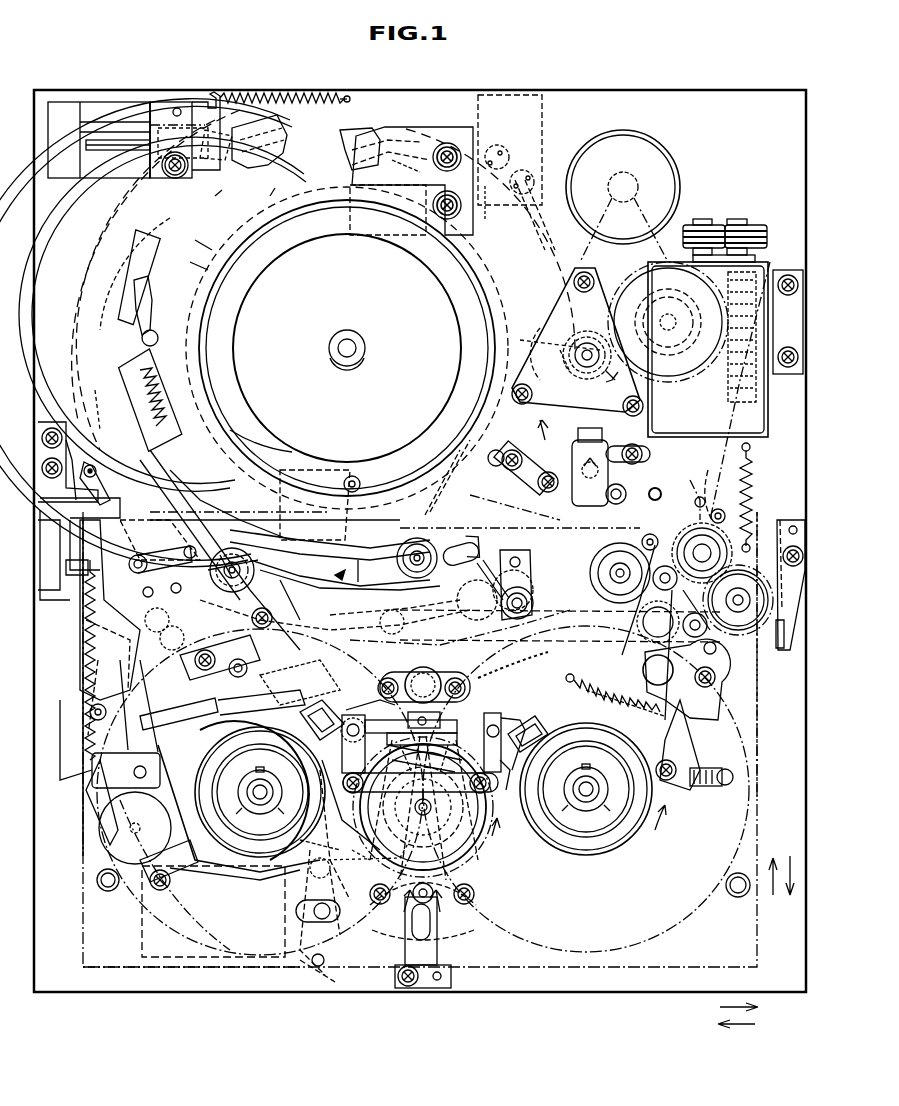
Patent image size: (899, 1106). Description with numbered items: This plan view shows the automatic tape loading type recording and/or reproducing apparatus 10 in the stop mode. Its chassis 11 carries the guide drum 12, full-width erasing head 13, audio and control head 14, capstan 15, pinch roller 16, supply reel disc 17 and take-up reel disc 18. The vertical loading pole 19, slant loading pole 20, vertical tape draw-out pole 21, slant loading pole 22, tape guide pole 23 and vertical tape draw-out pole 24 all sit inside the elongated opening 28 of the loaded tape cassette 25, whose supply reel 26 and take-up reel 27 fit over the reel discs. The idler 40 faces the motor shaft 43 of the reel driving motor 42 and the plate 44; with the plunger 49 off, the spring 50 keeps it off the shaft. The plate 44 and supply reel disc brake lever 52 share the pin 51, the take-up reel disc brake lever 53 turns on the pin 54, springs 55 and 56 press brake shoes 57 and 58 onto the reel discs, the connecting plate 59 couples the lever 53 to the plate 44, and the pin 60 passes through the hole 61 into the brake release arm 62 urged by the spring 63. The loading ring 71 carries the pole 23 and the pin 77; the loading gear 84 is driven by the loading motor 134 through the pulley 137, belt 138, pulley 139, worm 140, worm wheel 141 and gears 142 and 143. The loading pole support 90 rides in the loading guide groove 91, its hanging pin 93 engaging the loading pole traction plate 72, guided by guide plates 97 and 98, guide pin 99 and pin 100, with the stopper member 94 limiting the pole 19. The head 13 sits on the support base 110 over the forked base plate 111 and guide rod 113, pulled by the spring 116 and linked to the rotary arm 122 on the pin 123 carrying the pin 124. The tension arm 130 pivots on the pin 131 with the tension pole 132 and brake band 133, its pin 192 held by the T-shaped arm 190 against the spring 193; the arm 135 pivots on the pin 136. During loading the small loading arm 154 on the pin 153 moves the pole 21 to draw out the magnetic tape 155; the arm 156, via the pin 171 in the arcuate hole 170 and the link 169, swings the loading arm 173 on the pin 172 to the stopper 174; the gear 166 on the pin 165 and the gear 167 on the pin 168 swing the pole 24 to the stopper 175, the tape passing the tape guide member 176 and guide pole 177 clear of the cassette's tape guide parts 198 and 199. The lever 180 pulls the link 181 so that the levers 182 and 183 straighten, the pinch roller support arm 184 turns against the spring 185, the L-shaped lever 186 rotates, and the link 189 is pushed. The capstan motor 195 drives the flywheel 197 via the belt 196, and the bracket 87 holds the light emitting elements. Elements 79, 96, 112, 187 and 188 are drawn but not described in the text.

The tape recorder chassis 10 is at (701, 67).
The spring 11 is at (340, 96).
The head drum 12 is at (462, 250).
The guide block 13 is at (286, 124).
The link 14 is at (616, 466).
The slider 15 is at (604, 490).
The idler 16 is at (600, 590).
The supply reel 17 is at (226, 822).
The take-up reel 18 is at (624, 850).
The gear 19 is at (262, 582).
The plate 20 is at (280, 508).
The lever 21 is at (140, 520).
The guide 22 is at (470, 490).
The roller 23 is at (417, 571).
The lever 24 is at (690, 480).
The lever 25 is at (84, 840).
The arc 26 is at (148, 912).
The line 27 is at (775, 659).
The gear teeth 28 is at (545, 652).
The pinch roller arm 40 is at (478, 852).
The bracket 42 is at (458, 936).
The screw 43 is at (474, 880).
The block 44 is at (445, 718).
The dashed outline 49 is at (160, 962).
The pinch roller 50 is at (410, 846).
The lever 51 is at (342, 712).
The block 52 is at (306, 714).
The link 53 is at (515, 730).
The post 54 is at (490, 712).
The post 55 is at (345, 716).
The arm 56 is at (504, 778).
The reel hub 57 is at (262, 774).
The block 58 is at (530, 728).
The lever 59 is at (322, 810).
The capstan roller 60 is at (442, 680).
The bar 61 is at (420, 756).
The element 62 is at (282, 896).
The lever 63 is at (326, 880).
The lever 71 is at (530, 236).
The arm 72 is at (86, 470).
The guide 77 is at (385, 174).
The spring 79 is at (160, 368).
The triangular arm 84 is at (577, 342).
The frame 87 is at (520, 96).
The pin 90 is at (246, 681).
The ring 91 is at (222, 285).
The guide 93 is at (232, 480).
The block 94 is at (430, 126).
The lever 96 is at (300, 618).
The pins 97 is at (160, 616).
The arm 98 is at (330, 545).
The lever 99 is at (288, 596).
The plate 100 is at (220, 667).
The block 110 is at (168, 104).
The head 111 is at (108, 104).
The head block 112 is at (68, 104).
The head 113 is at (125, 144).
The spring 116 is at (268, 96).
The arc 122 is at (86, 292).
The lever 123 is at (95, 395).
The guide 124 is at (128, 258).
The plate 130 is at (160, 742).
The pin 131 is at (150, 786).
The bracket 132 is at (72, 430).
The lever 133 is at (262, 872).
The belt 134 is at (750, 420).
The lever 135 is at (338, 946).
The pin 136 is at (328, 966).
The pulley 137 is at (693, 224).
The base 138 is at (765, 246).
The pulley 139 is at (752, 224).
The bracket 140 is at (790, 374).
The motor 141 is at (708, 349).
The motor pulley 142 is at (668, 336).
The arc 143 is at (536, 326).
The pin 153 is at (128, 566).
The link 154 is at (160, 572).
The pin 155 is at (352, 475).
The lever 156 is at (468, 628).
The roller 165 is at (760, 640).
The shaft 166 is at (745, 610).
The pin 167 is at (729, 503).
The plate 168 is at (790, 575).
The link 169 is at (530, 562).
The lever 170 is at (482, 566).
The pin 171 is at (530, 600).
The pin 172 is at (640, 542).
The line 173 is at (520, 527).
The pin 174 is at (488, 440).
The lever 175 is at (726, 493).
The link 176 is at (502, 458).
The pin 177 is at (658, 488).
The arm 180 is at (370, 560).
The gear 181 is at (606, 640).
The pin 182 is at (730, 649).
The gear 183 is at (650, 645).
The gear 184 is at (686, 560).
The spring 185 is at (752, 484).
The lever 186 is at (716, 730).
The spring 187 is at (612, 694).
The screw 188 is at (705, 788).
The plate 189 is at (315, 682).
The lever 190 is at (128, 624).
The lever 192 is at (126, 756).
The spring 193 is at (80, 742).
The flywheel 195 is at (672, 156).
The hub 196 is at (608, 186).
The pin 197 is at (752, 452).
The plate 198 is at (148, 540).
The pin 199 is at (690, 507).